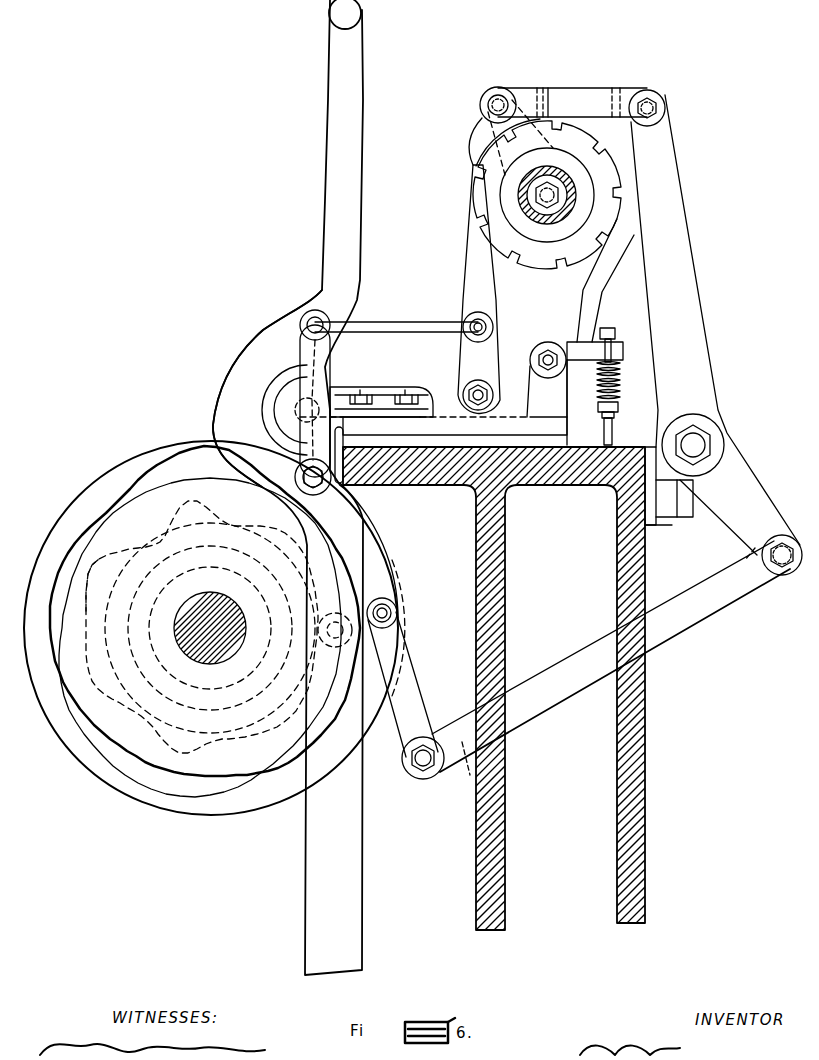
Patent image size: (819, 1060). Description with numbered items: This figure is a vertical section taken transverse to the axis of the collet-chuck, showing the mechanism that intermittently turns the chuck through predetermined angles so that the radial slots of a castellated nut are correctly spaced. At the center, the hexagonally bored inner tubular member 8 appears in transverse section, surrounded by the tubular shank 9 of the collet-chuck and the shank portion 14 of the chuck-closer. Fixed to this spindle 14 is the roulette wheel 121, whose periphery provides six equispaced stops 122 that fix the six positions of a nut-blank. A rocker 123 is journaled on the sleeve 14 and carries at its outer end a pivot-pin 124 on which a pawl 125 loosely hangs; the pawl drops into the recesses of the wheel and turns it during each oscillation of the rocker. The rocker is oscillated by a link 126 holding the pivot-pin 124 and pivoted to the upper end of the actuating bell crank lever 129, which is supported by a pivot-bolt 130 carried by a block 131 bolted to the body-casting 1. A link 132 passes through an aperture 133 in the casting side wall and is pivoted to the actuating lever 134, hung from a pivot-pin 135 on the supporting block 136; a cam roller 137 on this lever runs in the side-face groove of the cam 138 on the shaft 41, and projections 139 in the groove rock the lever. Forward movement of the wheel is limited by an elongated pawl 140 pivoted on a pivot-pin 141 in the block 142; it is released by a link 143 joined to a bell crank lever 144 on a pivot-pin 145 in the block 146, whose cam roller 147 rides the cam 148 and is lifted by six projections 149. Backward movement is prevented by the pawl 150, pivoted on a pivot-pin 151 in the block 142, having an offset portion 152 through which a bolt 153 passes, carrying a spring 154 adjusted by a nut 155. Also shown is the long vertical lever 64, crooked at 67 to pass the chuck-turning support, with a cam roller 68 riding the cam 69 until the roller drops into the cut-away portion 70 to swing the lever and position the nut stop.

The body-casting 1 is at (549, 486).
The inner elongated tubular member 8 is at (530, 196).
The tubular shank 9 is at (566, 196).
The shank portion of chuck-closer 14 is at (547, 174).
The shaft 41 is at (211, 628).
The long vertical lever 64 is at (288, 487).
The crook 67 is at (218, 400).
The cam roller 68 is at (326, 628).
The cam 69 is at (186, 552).
The cut-away portion 70 is at (200, 530).
The roulette wheel 121 is at (546, 267).
The stops 122 is at (472, 186).
The rocker 123 is at (510, 135).
The pivot-pin 124 is at (498, 88).
The pawl 125 is at (476, 132).
The link 126 is at (583, 90).
The actuating bell crank lever 129 is at (692, 265).
The pivot-bolt 130 is at (702, 442).
The block 131 is at (667, 517).
The link 132 is at (673, 600).
The aperture 133 is at (638, 678).
The actuating lever 134 is at (417, 694).
The pivot-pin 135 is at (296, 409).
The supporting block 136 is at (351, 386).
The cam roller 137 is at (372, 575).
The cam 138 is at (100, 560).
The projections 139 is at (88, 668).
The elongated pawl 140 is at (464, 278).
The pivot-pin 141 is at (478, 383).
The block 142 is at (524, 416).
The link 143 is at (400, 326).
The bell crank lever 144 is at (302, 366).
The pivot-pin 145 is at (300, 472).
The block 146 is at (425, 383).
The cam roller 147 is at (397, 613).
The cam 148 is at (130, 752).
The projections 149 is at (97, 522).
The pawl 150 is at (601, 282).
The pivot-pin 151 is at (548, 342).
The offset portion 152 is at (620, 348).
The bolt 153 is at (608, 328).
The spring 154 is at (619, 382).
The nut 155 is at (612, 406).